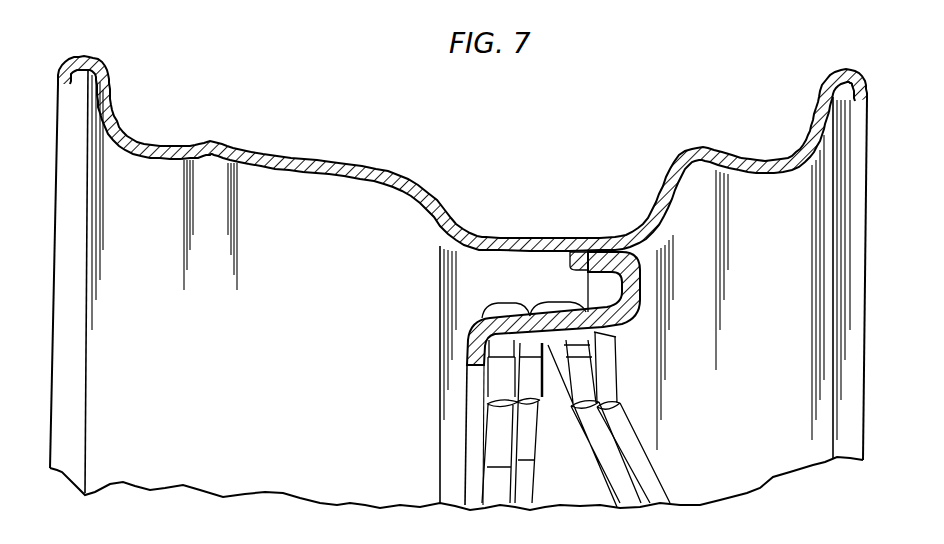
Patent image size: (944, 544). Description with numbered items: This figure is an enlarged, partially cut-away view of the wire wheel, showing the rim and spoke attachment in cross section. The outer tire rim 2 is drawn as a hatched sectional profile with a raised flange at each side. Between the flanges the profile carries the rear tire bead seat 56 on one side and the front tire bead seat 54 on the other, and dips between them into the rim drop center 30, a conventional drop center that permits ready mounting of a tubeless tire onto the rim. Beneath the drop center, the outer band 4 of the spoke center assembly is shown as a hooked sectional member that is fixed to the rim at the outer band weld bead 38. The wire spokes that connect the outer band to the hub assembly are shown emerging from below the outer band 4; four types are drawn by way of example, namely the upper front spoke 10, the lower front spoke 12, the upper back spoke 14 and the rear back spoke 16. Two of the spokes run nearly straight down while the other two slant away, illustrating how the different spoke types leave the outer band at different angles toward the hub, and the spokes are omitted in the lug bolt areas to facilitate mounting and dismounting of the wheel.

The outer tire rim 2 is at (830, 80).
The outer band 4 is at (641, 286).
The upper front spoke 10 is at (630, 448).
The lower front spoke 12 is at (587, 418).
The upper back spoke 14 is at (525, 447).
The rear back spoke 16 is at (502, 426).
The rim drop center 30 is at (573, 237).
The outer band weld bead 38 is at (562, 258).
The front tire bead seat 54 is at (677, 160).
The rear tire bead seat 56 is at (224, 146).